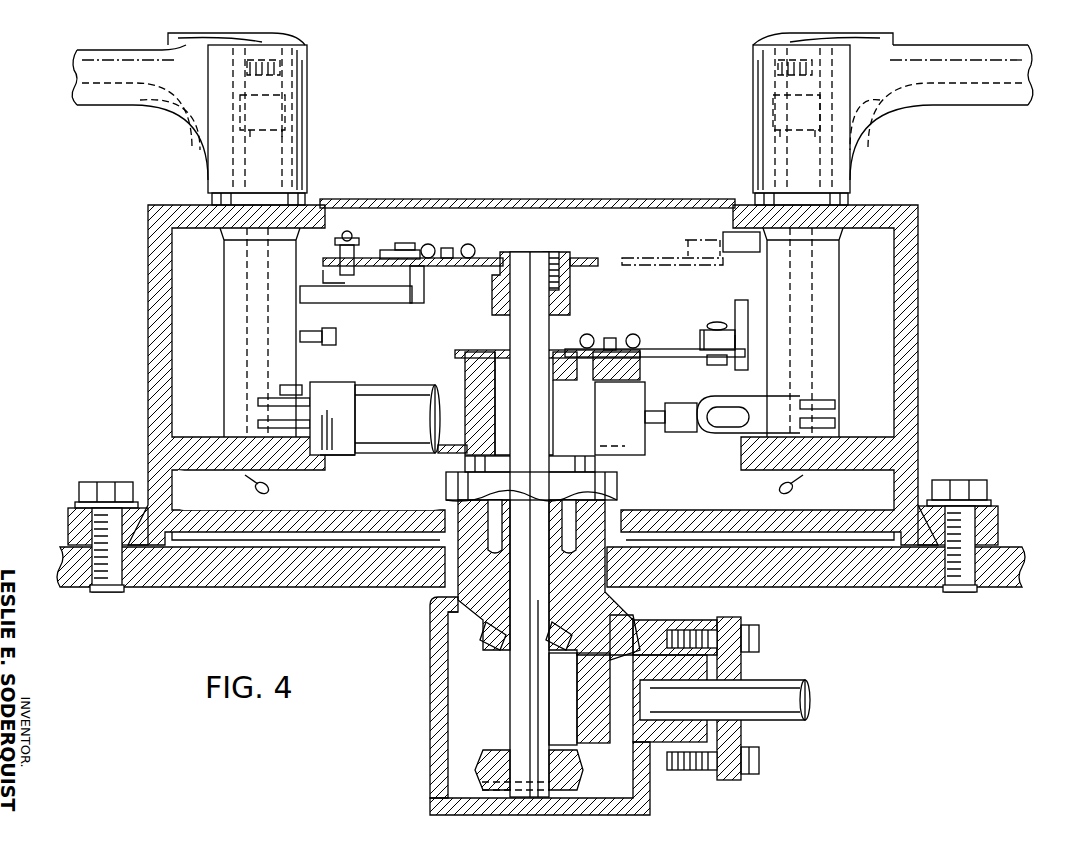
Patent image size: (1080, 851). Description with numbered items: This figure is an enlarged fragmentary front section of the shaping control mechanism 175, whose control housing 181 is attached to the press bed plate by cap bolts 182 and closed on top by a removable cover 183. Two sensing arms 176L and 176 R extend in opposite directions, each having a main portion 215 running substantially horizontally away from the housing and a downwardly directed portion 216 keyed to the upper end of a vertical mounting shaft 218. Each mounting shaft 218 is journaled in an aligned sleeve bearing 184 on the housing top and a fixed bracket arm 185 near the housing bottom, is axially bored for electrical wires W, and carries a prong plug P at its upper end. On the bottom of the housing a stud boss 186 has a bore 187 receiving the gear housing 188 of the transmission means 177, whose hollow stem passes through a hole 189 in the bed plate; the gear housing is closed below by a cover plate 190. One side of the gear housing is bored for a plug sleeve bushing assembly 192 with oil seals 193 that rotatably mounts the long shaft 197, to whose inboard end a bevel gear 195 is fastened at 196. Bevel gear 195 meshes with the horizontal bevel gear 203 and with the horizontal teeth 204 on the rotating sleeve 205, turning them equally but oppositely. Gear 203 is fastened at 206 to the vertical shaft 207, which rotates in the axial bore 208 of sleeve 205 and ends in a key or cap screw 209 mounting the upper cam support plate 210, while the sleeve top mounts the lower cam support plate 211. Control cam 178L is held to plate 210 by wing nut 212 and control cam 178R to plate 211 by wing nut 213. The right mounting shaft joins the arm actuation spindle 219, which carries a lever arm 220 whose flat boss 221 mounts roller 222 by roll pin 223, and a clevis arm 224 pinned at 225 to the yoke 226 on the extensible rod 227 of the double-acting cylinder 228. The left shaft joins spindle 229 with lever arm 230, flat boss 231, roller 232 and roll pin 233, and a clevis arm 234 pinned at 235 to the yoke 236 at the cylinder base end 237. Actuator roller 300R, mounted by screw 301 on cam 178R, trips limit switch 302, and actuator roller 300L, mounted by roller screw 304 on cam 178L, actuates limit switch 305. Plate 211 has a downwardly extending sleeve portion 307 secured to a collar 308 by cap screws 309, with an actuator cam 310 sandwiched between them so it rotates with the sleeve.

The control mechanism 175 is at (922, 275).
The left sensing arm 176L is at (141, 96).
The right sensing arm 176 R is at (848, 112).
The transmission means 177 is at (778, 672).
The left control cam 178L is at (398, 249).
The right control cam 178R is at (718, 322).
The control housing 181 is at (146, 300).
The cap bolts 182 is at (106, 482).
The cover 183 is at (568, 198).
The sleeve bearings 184 is at (306, 198).
The bracket arms 185 is at (232, 472).
The stud boss 186 is at (618, 486).
The bore 187 is at (612, 516).
The gear housing 188 is at (440, 698).
The hole 189 is at (625, 562).
The cover plate 190 is at (642, 806).
The plug sleeve bushing assembly 192 is at (746, 742).
The oil seals 193 is at (668, 722).
The bevel gear 195 is at (549, 636).
The fastening 196 is at (622, 630).
The long shaft 197 is at (805, 706).
The horizontal bevel gear 203 is at (562, 770).
The horizontal teeth 204 is at (484, 640).
The rotating sleeve 205 is at (455, 593).
The fastening 206 is at (480, 787).
The vertical shaft 207 is at (508, 706).
The axial bore 208 is at (500, 655).
The key or cap screw 209 is at (560, 253).
The upper cam support plate 210 is at (507, 283).
The lower cam support plate 211 is at (620, 418).
The wing nut 212 is at (472, 246).
The wing nut 213 is at (592, 348).
The main portion 215 is at (92, 80).
The downwardly directed portion 216 is at (300, 74).
The mounting shaft 218 is at (304, 182).
The arm actuation spindle 219 is at (820, 308).
The lever arm 220 is at (674, 380).
The flat boss 221 is at (685, 416).
The roller 222 is at (700, 348).
The roll pin 223 is at (634, 334).
The clevis arm 224 is at (802, 423).
The pin 225 is at (806, 402).
The yoke 226 is at (706, 406).
The extensible rod 227 is at (648, 422).
The cylinder 228 is at (627, 447).
The actuation spindle 229 is at (230, 302).
The lever arm 230 is at (345, 304).
The flat boss 231 is at (419, 304).
The roller 232 is at (405, 243).
The roll pin 233 is at (420, 257).
The clevis arm 234 is at (265, 406).
The pin 235 is at (292, 386).
The yoke 236 is at (375, 418).
The base end 237 is at (336, 457).
The actuator roller 300L is at (345, 283).
The actuator roller 300R is at (737, 342).
The screw 301 is at (722, 330).
The limit switch 302 is at (322, 338).
The roller screw 304 is at (349, 233).
The limit switch 305 is at (738, 232).
The sleeve portion 307 is at (464, 392).
The collar 308 is at (460, 470).
The cap screws 309 is at (560, 350).
The actuator cam 310 is at (448, 444).
The plug P is at (285, 97).
The electrical wires W is at (259, 485).